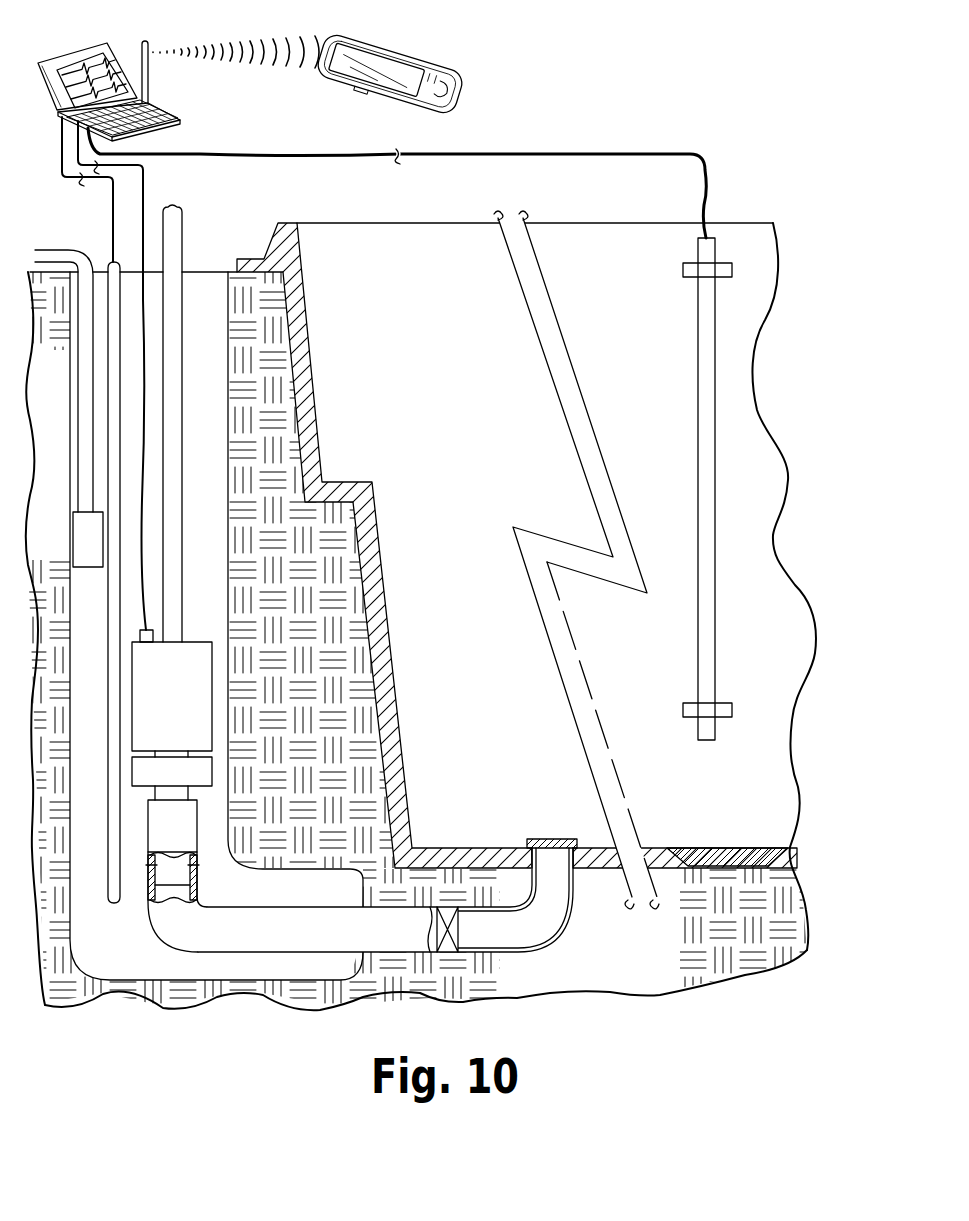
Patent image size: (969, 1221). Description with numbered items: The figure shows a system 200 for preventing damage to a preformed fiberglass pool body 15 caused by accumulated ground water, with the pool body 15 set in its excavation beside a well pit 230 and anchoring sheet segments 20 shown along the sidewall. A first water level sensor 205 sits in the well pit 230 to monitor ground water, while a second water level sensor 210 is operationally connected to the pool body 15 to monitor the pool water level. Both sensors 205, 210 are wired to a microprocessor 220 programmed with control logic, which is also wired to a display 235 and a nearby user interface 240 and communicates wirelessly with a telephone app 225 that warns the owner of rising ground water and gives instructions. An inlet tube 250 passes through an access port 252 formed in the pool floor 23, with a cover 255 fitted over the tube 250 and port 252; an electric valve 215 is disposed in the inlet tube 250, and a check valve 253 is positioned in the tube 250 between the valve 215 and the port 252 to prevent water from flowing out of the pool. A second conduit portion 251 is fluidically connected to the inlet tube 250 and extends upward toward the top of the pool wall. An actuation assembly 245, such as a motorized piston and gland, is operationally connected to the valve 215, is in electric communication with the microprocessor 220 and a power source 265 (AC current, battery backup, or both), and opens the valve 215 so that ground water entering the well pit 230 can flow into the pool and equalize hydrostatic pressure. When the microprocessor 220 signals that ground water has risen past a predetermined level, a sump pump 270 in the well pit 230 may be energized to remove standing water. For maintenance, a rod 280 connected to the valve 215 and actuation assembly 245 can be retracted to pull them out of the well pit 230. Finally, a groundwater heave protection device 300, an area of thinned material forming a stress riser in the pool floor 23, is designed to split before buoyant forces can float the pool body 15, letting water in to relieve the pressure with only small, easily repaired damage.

The pool body 15 is at (355, 703).
The sheet segments 20 is at (385, 778).
The pool floor 23 is at (795, 868).
The system for preventing pool damage due to accumulated ground water 200 is at (125, 1038).
The first water level sensor 205 is at (110, 877).
The second water level sensor 210 is at (698, 350).
The valve 215 is at (186, 838).
The microprocessor 220 is at (166, 126).
The telephone app 225 is at (430, 60).
The well pit 230 is at (200, 290).
The display 235 is at (90, 60).
The user interface 240 is at (160, 106).
The actuation assembly 245 is at (186, 706).
The inlet tube 250 is at (470, 953).
The second conduit portion 251 is at (70, 487).
The access port 252 is at (517, 858).
The check valve 253 is at (455, 930).
The cover 255 is at (568, 838).
The power source 265 is at (186, 786).
The sump pump 270 is at (87, 568).
The rod 280 is at (185, 222).
The groundwater heave protection device 300 is at (720, 848).